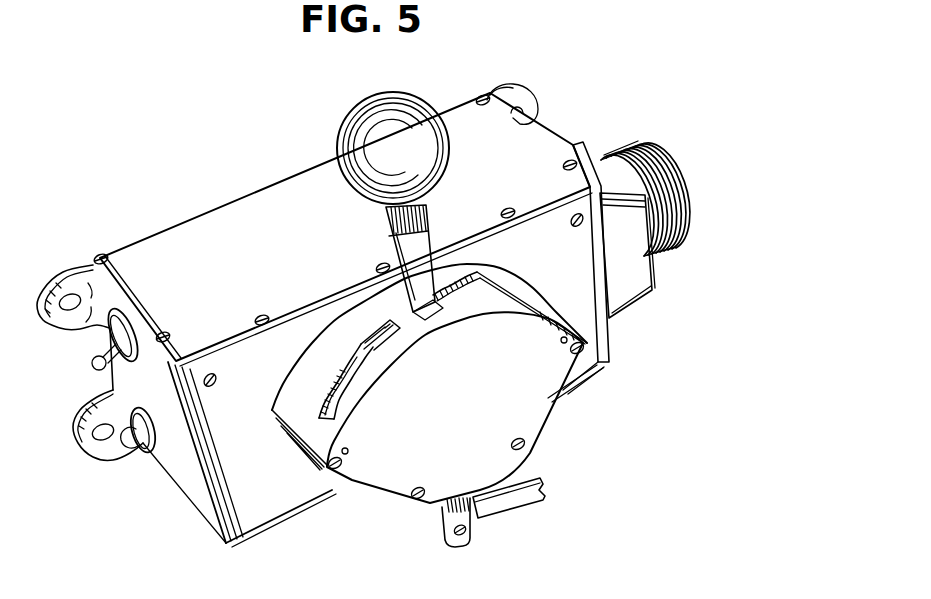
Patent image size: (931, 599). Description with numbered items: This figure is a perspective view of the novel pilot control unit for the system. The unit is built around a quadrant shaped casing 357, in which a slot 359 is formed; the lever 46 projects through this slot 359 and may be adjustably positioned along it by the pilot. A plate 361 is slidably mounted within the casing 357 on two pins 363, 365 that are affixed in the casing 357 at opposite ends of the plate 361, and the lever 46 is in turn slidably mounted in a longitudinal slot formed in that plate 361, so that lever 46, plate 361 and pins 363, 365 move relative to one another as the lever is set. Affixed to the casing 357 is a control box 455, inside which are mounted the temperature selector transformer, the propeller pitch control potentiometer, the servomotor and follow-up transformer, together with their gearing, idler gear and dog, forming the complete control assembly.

The control box 455 is at (300, 256).
The lever 46 is at (415, 241).
The casing 357 is at (476, 447).
The slot 359 is at (437, 305).
The plate 361 is at (392, 343).
The pin 363 is at (350, 451).
The pin 365 is at (561, 342).